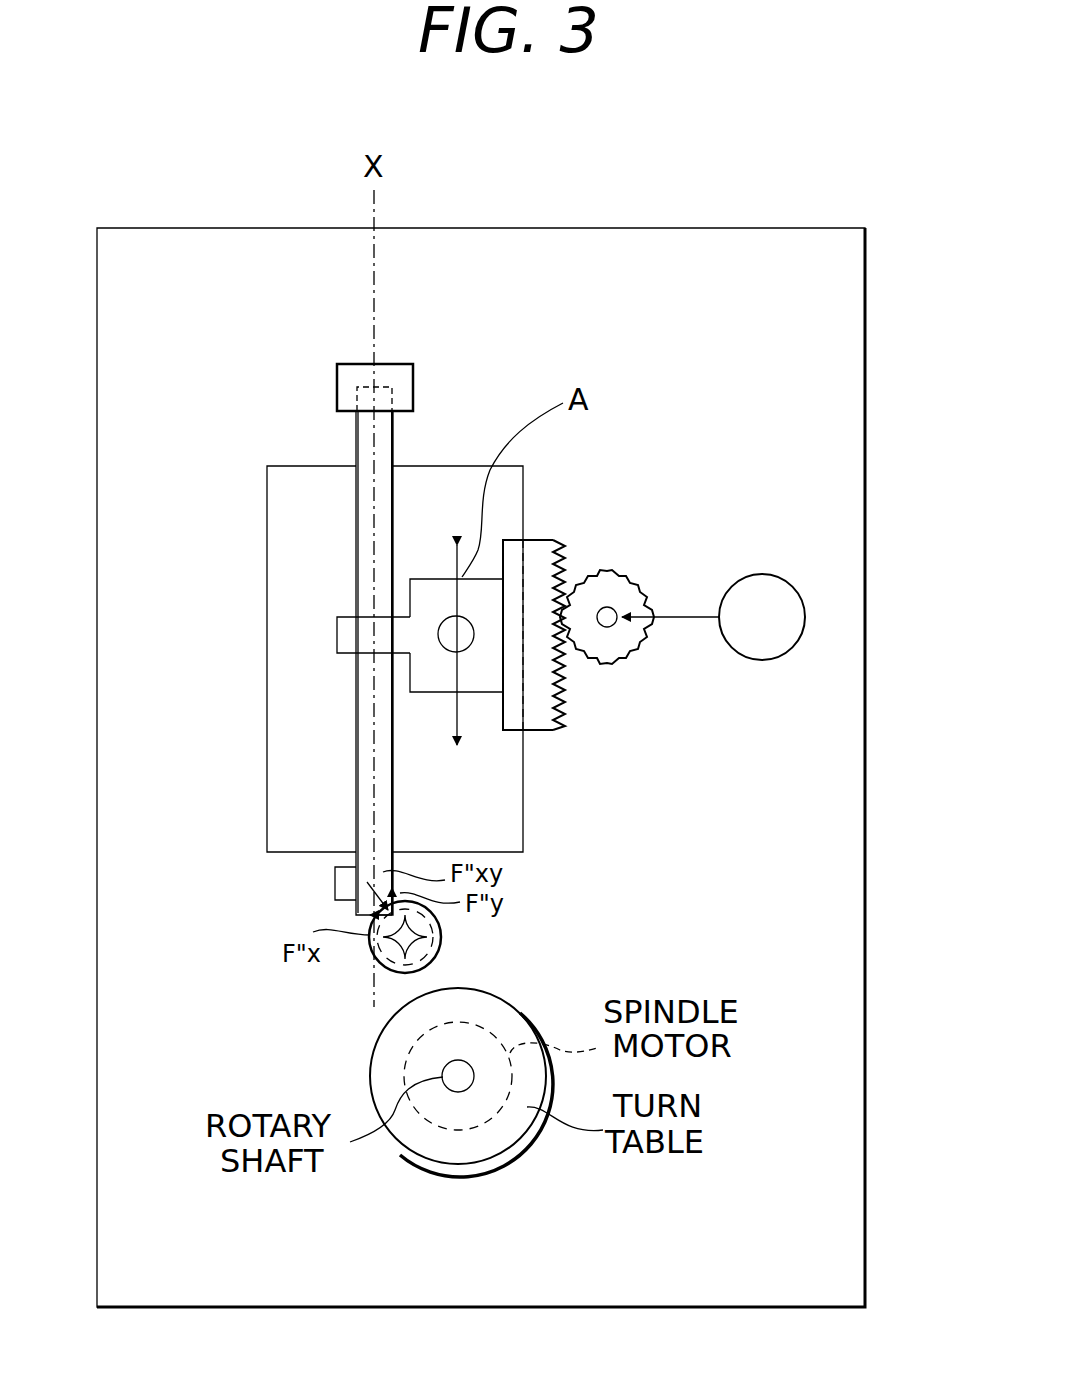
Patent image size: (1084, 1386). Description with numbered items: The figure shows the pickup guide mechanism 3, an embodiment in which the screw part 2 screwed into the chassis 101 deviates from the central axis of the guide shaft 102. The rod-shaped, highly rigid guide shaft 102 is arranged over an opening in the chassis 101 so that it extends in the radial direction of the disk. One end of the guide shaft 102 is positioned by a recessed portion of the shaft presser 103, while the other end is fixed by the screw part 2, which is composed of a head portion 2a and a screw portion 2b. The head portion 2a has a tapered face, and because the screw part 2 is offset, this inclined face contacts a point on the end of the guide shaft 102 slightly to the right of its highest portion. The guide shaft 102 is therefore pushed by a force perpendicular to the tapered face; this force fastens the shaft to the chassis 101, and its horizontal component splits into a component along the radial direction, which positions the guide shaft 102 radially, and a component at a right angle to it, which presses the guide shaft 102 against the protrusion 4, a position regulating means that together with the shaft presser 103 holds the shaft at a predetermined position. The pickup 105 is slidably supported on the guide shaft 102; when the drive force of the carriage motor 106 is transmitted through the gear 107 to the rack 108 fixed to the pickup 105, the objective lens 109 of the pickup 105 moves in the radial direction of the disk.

The chassis 101 is at (702, 245).
The guide shaft 102 is at (387, 434).
The shaft presser 103 is at (396, 365).
The pickup 105 is at (440, 695).
The carriage motor 106 is at (762, 574).
The gear 107 is at (618, 570).
The rack 108 is at (548, 540).
The objective lens 109 is at (447, 645).
The screw part 2 is at (496, 939).
The head portion 2a is at (442, 928).
The screw portion 2b is at (433, 955).
The pickup guide mechanism 3 is at (890, 352).
The protrusion 4 is at (343, 883).